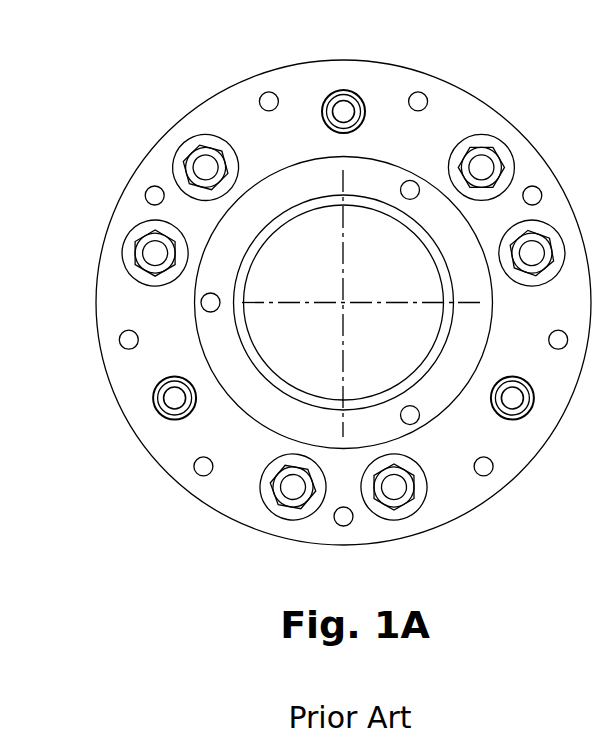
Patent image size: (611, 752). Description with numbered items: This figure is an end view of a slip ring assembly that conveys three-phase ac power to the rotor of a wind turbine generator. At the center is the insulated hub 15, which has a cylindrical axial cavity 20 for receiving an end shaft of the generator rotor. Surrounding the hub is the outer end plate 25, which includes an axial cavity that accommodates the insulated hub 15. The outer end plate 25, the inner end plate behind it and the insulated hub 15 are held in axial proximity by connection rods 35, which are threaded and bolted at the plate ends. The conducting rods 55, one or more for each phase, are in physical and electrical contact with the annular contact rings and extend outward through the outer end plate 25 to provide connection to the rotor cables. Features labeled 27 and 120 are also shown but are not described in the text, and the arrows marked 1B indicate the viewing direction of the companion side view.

The insulated hub 15 is at (288, 187).
The cylindrical axial cavity 20 is at (410, 277).
The outer end plate 25 is at (372, 60).
The flange with mounting holes 27 is at (443, 115).
The connection rods 35 is at (342, 113).
The conducting rods 55 is at (154, 250).
The alignment holes 120 is at (410, 186).
The side view indicator 1B is at (580, 63).